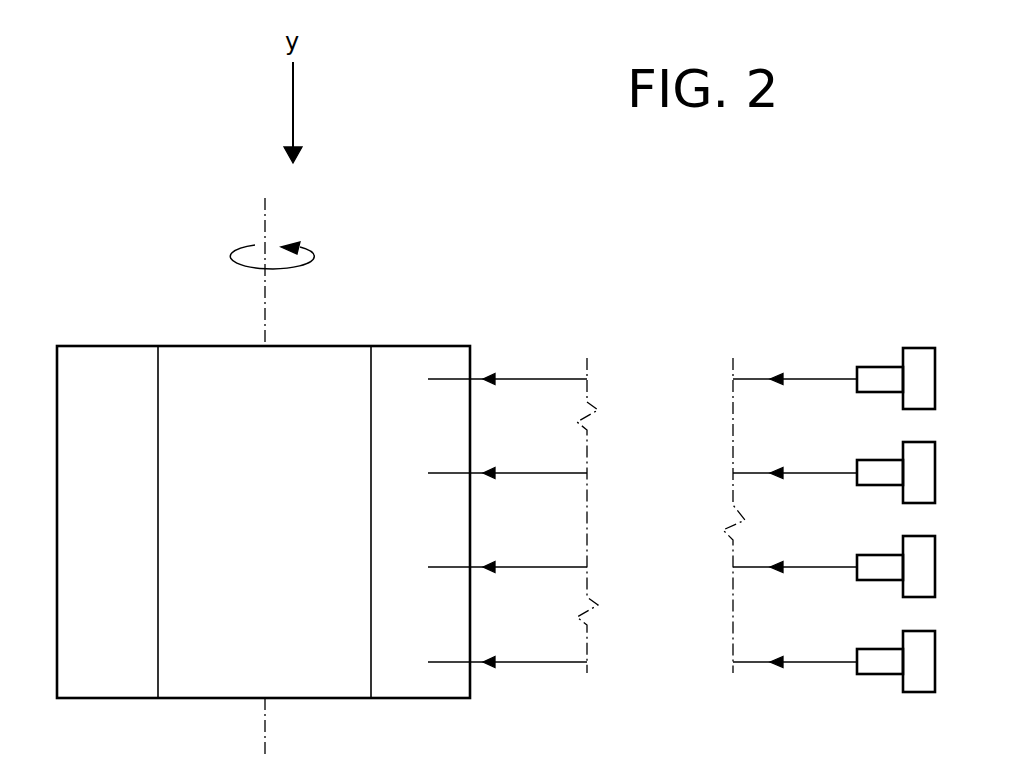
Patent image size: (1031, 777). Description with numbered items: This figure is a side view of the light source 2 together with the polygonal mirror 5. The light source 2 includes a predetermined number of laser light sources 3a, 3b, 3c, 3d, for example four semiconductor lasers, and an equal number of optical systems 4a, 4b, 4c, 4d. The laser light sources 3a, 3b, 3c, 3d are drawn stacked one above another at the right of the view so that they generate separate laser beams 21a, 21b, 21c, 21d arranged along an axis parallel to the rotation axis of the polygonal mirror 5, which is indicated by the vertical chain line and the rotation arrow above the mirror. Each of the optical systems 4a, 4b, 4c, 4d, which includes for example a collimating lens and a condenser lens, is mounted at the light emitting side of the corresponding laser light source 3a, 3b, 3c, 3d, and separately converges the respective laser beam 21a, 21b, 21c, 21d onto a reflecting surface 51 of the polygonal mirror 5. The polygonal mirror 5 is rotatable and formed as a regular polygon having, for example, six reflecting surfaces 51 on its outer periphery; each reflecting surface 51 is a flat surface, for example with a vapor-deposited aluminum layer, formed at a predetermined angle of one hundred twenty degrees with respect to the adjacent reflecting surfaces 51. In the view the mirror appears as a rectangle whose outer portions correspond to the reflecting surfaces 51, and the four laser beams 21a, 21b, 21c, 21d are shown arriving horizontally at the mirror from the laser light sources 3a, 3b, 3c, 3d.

The light source 2 is at (957, 303).
The polygonal mirror 5 is at (158, 318).
The reflecting surface 51 is at (120, 680).
The laser light source 3a is at (937, 393).
The laser light source 3b is at (973, 484).
The laser light source 3c is at (937, 581).
The laser light source 3d is at (973, 673).
The optical system 4a is at (865, 366).
The optical system 4b is at (865, 460).
The optical system 4c is at (865, 553).
The optical system 4d is at (865, 646).
The laser beam 21a is at (745, 380).
The laser beam 21b is at (745, 474).
The laser beam 21c is at (745, 568).
The laser beam 21d is at (745, 663).